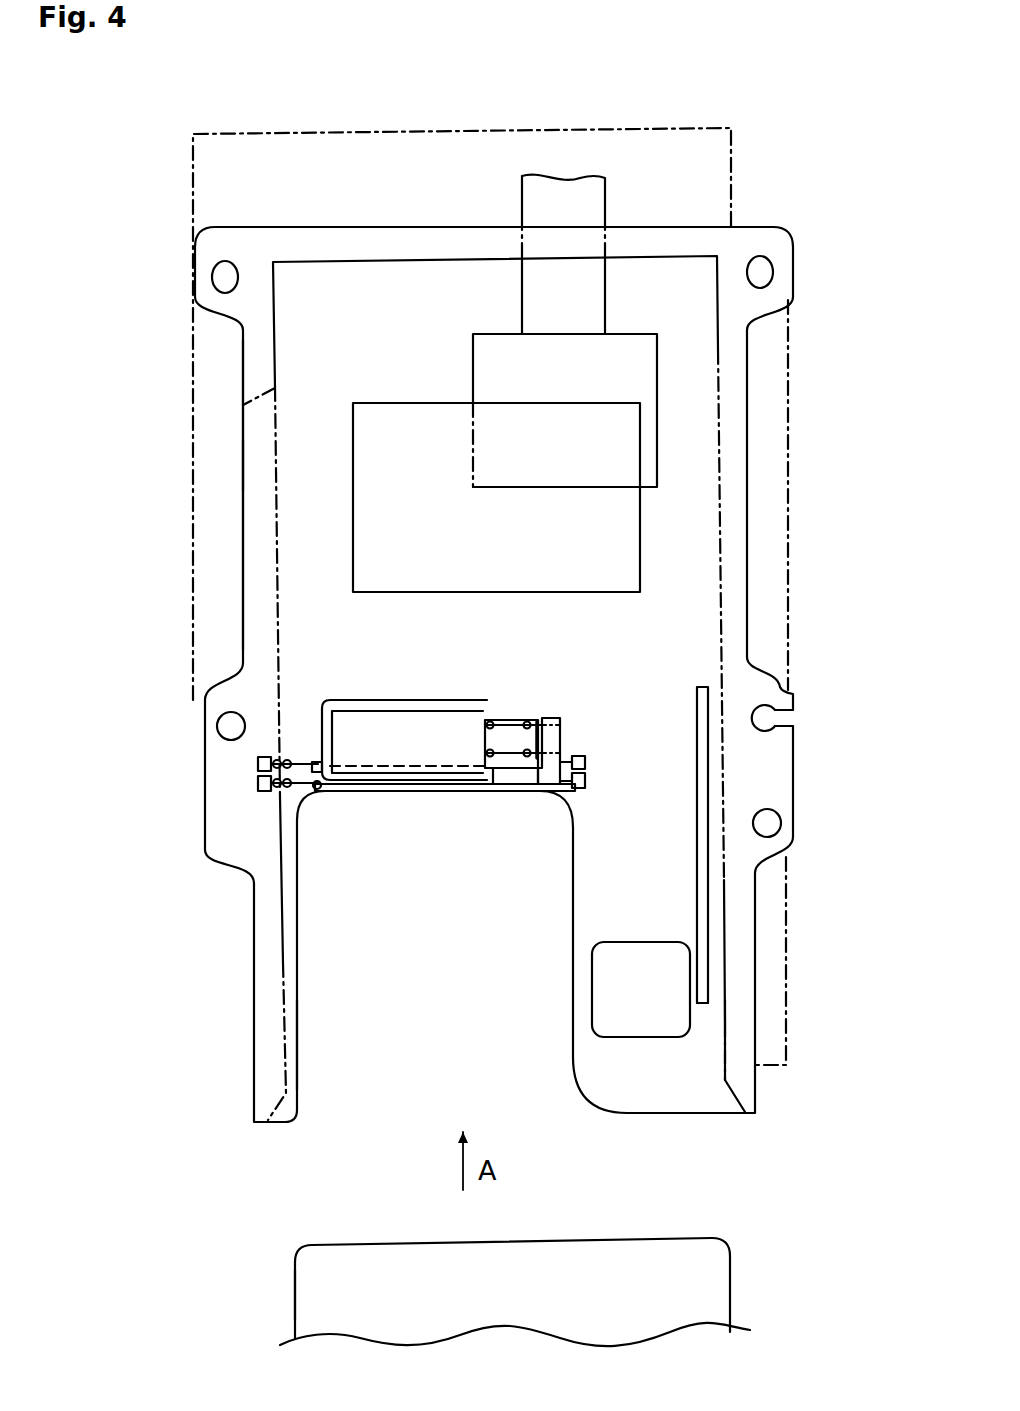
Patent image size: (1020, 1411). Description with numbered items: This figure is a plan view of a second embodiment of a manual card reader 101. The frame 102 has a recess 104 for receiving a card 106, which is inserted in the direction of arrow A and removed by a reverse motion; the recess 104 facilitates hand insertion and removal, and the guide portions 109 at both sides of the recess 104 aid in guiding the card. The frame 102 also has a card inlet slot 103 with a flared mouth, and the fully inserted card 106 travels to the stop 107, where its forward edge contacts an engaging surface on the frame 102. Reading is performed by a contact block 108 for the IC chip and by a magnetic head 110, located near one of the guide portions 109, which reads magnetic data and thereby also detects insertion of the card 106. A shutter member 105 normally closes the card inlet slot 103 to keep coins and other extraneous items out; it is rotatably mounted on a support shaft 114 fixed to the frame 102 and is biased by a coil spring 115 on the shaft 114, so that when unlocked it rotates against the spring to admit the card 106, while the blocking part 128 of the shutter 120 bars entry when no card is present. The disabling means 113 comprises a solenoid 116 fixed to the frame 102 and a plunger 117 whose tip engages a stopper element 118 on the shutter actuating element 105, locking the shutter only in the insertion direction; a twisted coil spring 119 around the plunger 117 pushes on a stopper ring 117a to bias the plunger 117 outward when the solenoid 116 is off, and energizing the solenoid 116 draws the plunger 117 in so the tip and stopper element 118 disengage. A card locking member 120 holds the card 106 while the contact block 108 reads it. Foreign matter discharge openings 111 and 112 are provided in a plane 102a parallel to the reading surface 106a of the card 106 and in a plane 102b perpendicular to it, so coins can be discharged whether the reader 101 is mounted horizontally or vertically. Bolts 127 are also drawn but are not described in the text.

The card reader 101 is at (125, 212).
The frame 102 is at (258, 930).
The plane parallel to reading surface 102a is at (596, 522).
The plane perpendicular to reading surface 102b is at (243, 522).
The card inlet slot 103 is at (441, 793).
The recess 104 is at (433, 980).
The shutter member 105 is at (517, 775).
The card 106 is at (735, 1268).
The reading surface 106a is at (330, 1295).
The stop 107 is at (652, 257).
The contact block 108 is at (657, 366).
The guide portions 109 is at (287, 1060).
The magnetic head 110 is at (668, 993).
The foreign matter discharge opening 111 is at (645, 528).
The foreign matter discharge opening 112 is at (257, 466).
The disabling means 113 is at (380, 748).
The support shaft 114 is at (304, 777).
The coil spring 115 is at (293, 790).
The solenoid 116 is at (397, 742).
The plunger 117 is at (510, 738).
The stopper ring 117a is at (540, 720).
The stopper element 118 is at (553, 755).
The twisted coil spring 119 is at (489, 722).
The card locking member 120 is at (696, 787).
The bolt 127 is at (258, 785).
The blocking part 128 is at (708, 995).